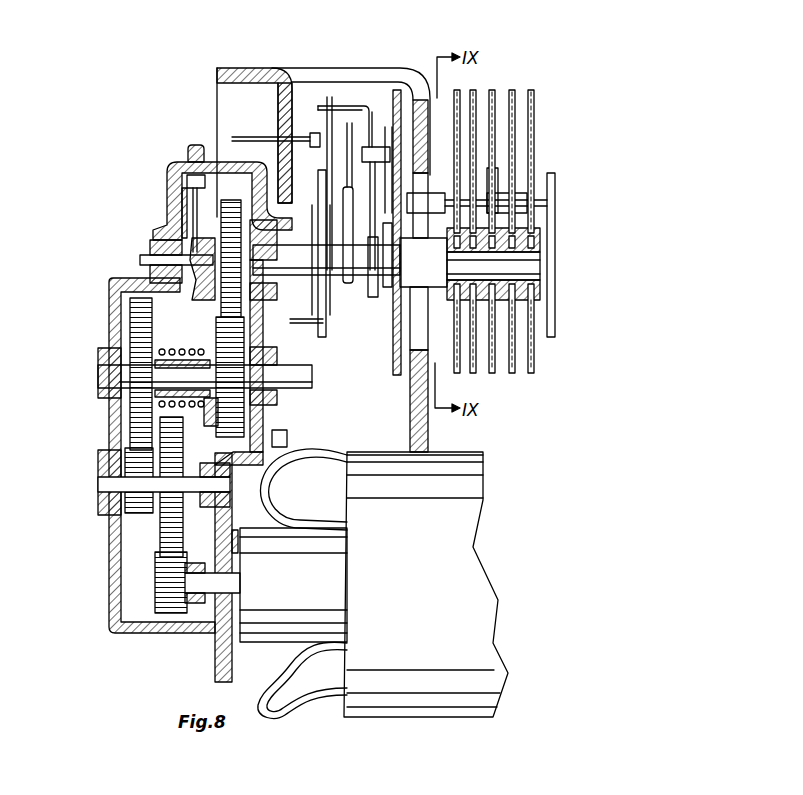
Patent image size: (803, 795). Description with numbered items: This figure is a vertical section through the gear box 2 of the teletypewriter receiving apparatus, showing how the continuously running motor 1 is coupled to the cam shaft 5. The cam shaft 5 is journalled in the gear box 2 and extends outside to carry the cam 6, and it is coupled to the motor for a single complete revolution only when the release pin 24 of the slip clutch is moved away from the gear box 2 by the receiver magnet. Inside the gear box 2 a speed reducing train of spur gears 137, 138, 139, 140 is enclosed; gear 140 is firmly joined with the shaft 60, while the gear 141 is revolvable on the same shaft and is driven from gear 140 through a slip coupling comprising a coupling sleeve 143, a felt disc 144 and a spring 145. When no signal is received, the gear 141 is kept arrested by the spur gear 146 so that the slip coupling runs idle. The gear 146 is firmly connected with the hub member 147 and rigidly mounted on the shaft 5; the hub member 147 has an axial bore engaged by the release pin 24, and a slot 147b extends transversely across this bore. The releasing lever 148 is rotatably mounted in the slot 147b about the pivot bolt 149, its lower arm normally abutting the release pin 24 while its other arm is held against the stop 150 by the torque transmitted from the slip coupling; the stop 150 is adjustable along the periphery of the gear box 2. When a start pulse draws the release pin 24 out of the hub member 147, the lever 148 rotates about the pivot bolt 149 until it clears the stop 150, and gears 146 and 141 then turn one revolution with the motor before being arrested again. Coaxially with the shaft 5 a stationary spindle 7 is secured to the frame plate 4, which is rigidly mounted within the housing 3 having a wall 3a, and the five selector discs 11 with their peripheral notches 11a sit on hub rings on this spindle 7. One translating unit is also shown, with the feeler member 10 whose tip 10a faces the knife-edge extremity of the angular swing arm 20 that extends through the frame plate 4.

The motor 1 is at (480, 484).
The gear box 2 is at (150, 633).
The housing 3 is at (263, 68).
The wall of the housing 3a is at (298, 97).
The frame plate 4 is at (398, 376).
The cam shaft 5 is at (290, 258).
The cam 6 is at (343, 280).
The stationary spindle 7 is at (540, 265).
The feeler member 10 is at (411, 100).
The tip of the feeler member 10a is at (380, 147).
The selector discs 11 is at (531, 374).
The notches 11a is at (532, 90).
The swing arm 20 is at (420, 206).
The release pin 24 is at (153, 255).
The shaft 60 is at (314, 384).
The spur gear 137 is at (158, 582).
The spur gear 138 is at (162, 525).
The spur gear 139 is at (112, 450).
The spur gear 140 is at (130, 322).
The gear 141 is at (284, 445).
The coupling sleeve 143 is at (210, 340).
The felt disc 144 is at (213, 418).
The spring 145 is at (212, 352).
The spur gear 146 is at (190, 148).
The hub member 147 is at (146, 275).
The slot 147b is at (148, 254).
The releasing lever 148 is at (186, 198).
The pivot bolt 149 is at (168, 213).
The stop 150 is at (172, 160).